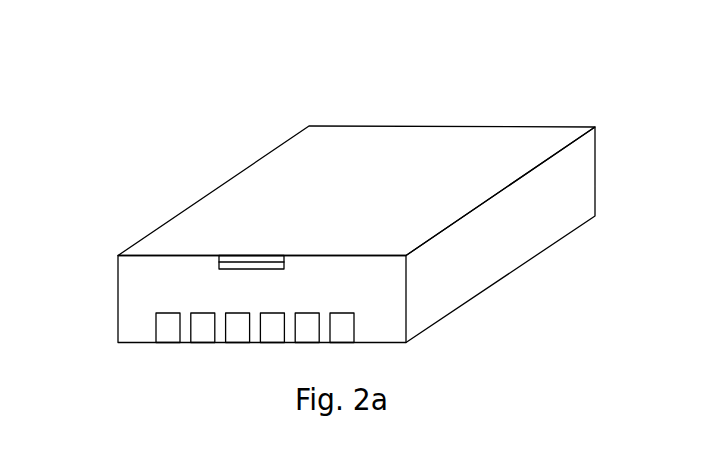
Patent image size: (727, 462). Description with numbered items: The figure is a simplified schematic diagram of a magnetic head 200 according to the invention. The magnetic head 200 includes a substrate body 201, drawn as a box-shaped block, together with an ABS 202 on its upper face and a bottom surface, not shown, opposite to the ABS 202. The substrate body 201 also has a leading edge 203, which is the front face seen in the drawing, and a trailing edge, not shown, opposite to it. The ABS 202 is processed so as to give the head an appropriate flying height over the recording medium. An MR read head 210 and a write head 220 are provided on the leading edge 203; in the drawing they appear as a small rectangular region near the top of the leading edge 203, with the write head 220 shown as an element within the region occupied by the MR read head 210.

The magnetic head 200 is at (150, 38).
The substrate body 201 is at (257, 126).
The ABS 202 is at (252, 186).
The leading edge 203 is at (140, 286).
The MR read head 210 is at (245, 257).
The write head 220 is at (245, 266).